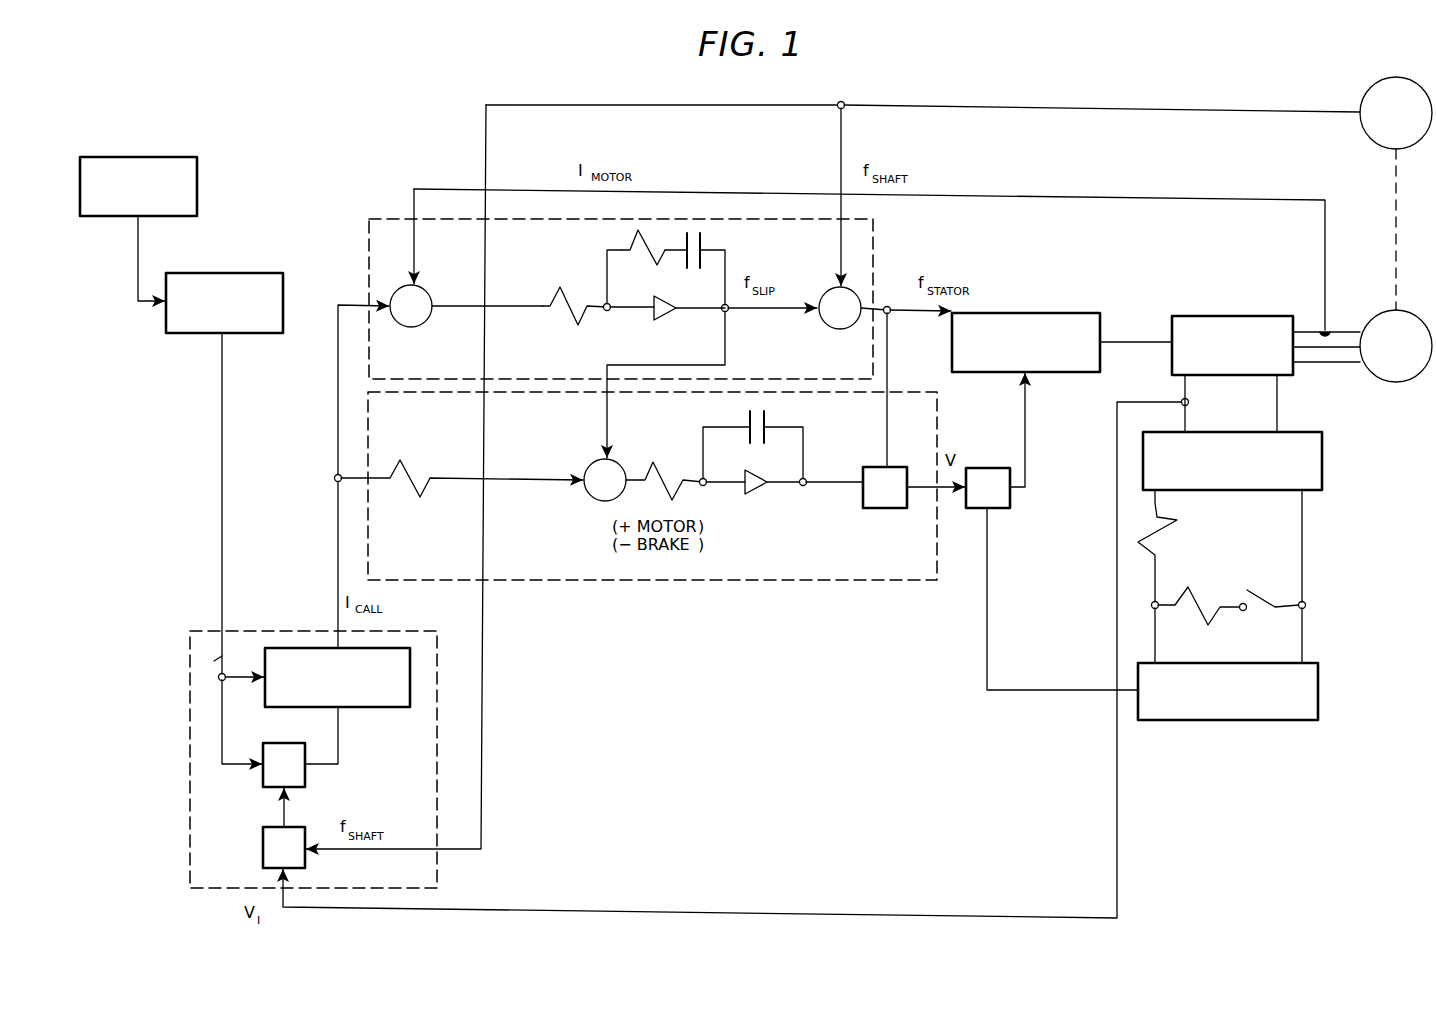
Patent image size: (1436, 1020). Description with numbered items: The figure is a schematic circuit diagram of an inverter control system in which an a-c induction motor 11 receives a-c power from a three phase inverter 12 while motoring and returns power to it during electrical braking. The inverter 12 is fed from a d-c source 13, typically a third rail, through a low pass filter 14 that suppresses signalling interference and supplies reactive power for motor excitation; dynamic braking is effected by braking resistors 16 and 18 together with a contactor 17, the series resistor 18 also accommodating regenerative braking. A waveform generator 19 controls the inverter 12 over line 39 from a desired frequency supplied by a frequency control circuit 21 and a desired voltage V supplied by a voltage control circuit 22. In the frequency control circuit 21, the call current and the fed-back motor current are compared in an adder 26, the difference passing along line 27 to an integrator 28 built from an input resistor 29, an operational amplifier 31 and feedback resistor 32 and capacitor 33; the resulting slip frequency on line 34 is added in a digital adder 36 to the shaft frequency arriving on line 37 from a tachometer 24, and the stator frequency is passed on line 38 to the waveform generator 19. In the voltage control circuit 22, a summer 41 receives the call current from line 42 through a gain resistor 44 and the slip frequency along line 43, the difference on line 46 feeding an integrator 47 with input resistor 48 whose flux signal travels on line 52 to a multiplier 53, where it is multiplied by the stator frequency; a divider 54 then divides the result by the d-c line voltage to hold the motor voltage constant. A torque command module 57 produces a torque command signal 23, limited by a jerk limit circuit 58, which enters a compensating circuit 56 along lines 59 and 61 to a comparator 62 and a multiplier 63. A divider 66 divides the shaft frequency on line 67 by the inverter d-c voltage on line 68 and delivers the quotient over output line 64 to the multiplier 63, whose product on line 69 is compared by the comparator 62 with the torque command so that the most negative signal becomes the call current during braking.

The a-c induction motor 11 is at (1391, 323).
The three phase inverter 12 is at (1266, 346).
The d-c source 13 is at (1228, 723).
The low pass filter 14 is at (1264, 461).
The braking resistor 16 is at (1199, 604).
The contactor 17 is at (1276, 576).
The series resistor 18 is at (1187, 547).
The waveform generator 19 is at (1026, 368).
The frequency control circuit 21 is at (866, 258).
The voltage control circuit 22 is at (918, 570).
The torque command signal 23 is at (164, 258).
The tachometer 24 is at (959, 193).
The adder 26 is at (424, 283).
The line 27 is at (487, 271).
The integrator 28 is at (704, 294).
The input resistor 29 is at (575, 281).
The operational amplifier 31 is at (667, 326).
The feedback resistor 32 is at (653, 231).
The feedback capacitor 33 is at (718, 232).
The line 34 is at (772, 333).
The adder 36 is at (820, 217).
The line 37 is at (872, 262).
The line 38 is at (906, 387).
The line 39 is at (1136, 310).
The summer 41 is at (583, 499).
The line 42 is at (330, 476).
The line 43 is at (582, 351).
The gain resistor 44 is at (462, 459).
The line 46 is at (633, 445).
The integrator 47 is at (790, 466).
The input resistor 48 is at (703, 477).
The line 52 is at (834, 458).
The multiplier 53 is at (853, 499).
The divider 54 is at (1022, 531).
The compensating circuit 56 is at (416, 780).
The torque command module 57 is at (462, 300).
The jerk limit circuit 58 is at (244, 282).
The line 59 is at (242, 548).
The line 61 is at (182, 686).
The comparator 62 is at (337, 700).
The multiplier 63 is at (254, 779).
The output line 64 is at (308, 807).
The divider 66 is at (254, 848).
The line 67 is at (414, 477).
The line 68 is at (736, 659).
The line 69 is at (337, 753).